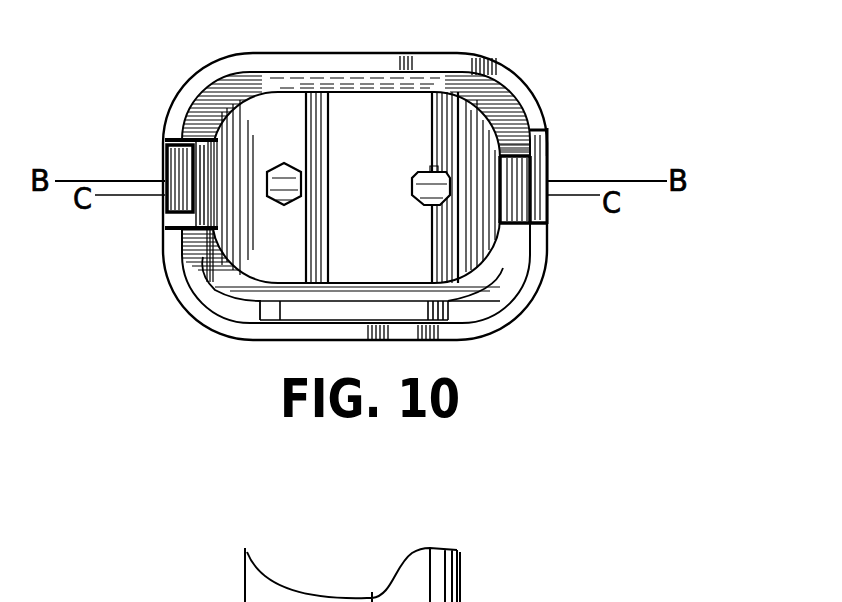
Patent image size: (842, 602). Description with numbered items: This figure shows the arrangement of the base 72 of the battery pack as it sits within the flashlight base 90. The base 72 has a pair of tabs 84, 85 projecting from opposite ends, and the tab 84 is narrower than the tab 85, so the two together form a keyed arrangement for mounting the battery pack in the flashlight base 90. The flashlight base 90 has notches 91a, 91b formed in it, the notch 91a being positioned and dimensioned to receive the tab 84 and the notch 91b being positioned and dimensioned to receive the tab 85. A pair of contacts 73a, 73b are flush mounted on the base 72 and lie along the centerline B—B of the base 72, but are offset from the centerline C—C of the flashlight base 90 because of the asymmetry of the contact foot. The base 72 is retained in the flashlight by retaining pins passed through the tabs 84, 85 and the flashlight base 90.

The flashlight base 90 is at (461, 56).
The notch 91b is at (175, 143).
The tab 85 is at (167, 165).
The contact 73a is at (429, 170).
The contact 73b is at (288, 205).
The notch 91a is at (545, 160).
The tab 84 is at (547, 173).
The base 72 is at (472, 230).